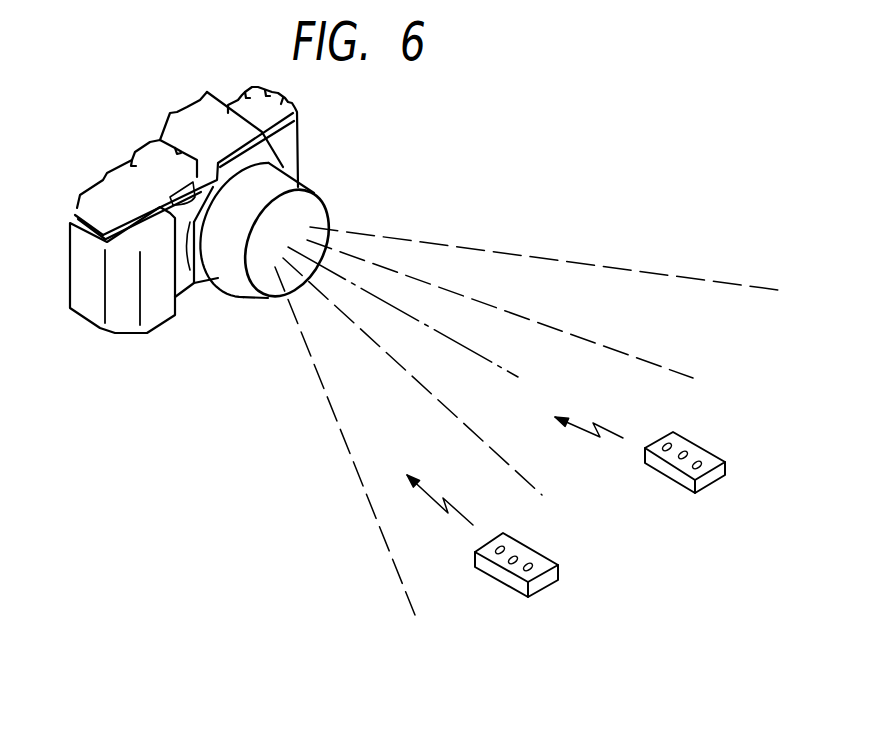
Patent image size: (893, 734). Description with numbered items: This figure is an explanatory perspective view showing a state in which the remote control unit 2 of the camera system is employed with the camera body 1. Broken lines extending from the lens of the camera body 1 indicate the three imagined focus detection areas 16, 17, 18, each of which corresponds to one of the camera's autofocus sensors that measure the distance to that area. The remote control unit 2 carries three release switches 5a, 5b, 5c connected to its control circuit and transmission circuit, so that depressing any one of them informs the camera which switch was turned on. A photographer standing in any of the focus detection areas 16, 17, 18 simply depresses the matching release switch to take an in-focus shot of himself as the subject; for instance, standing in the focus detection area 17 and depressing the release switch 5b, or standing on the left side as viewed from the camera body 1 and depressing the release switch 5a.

The camera body 1 is at (316, 97).
The remote control unit 2 is at (713, 508).
The release switch 5a is at (482, 572).
The release switch 5b is at (485, 605).
The release switch 5c is at (502, 627).
The focus detection area 16 is at (444, 493).
The focus detection area 17 is at (608, 413).
The focus detection area 18 is at (526, 421).